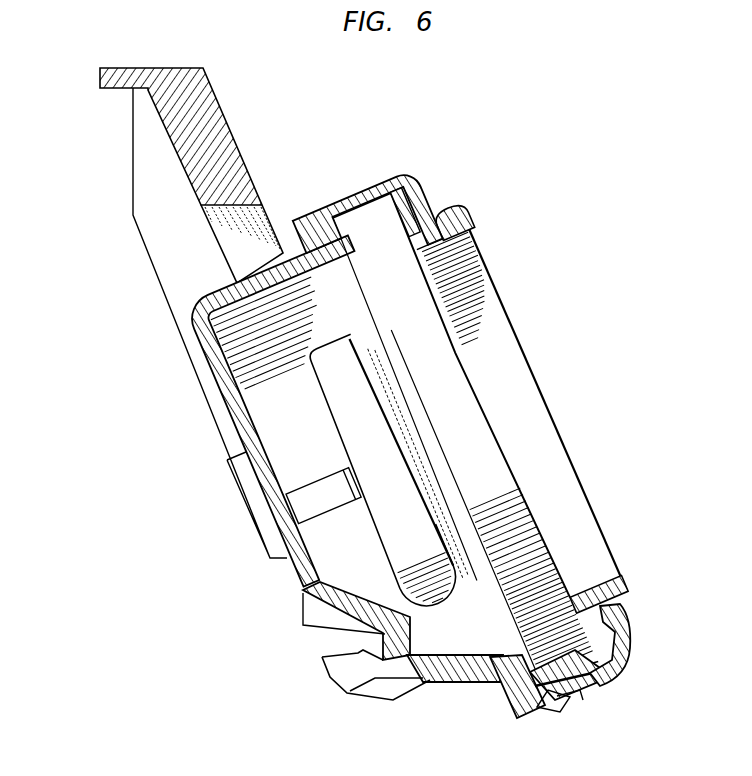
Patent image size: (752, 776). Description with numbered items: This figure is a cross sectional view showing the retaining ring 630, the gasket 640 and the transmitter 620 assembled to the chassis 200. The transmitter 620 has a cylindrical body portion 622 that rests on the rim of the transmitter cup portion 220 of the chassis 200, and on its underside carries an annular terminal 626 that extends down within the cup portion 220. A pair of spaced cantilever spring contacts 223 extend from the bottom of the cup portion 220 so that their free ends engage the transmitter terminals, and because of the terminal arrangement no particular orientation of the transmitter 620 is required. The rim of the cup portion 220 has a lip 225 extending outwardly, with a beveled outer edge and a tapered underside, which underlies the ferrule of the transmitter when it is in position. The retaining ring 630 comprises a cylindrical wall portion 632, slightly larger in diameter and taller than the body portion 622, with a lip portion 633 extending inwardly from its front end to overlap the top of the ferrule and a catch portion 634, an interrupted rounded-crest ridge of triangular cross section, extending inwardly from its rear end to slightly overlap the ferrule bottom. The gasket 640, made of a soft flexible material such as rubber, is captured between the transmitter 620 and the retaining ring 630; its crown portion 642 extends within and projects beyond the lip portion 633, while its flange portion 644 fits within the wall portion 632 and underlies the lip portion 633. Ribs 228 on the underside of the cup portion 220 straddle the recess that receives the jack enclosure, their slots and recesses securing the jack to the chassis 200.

The chassis 200 is at (212, 377).
The transmitter cup portion 220 is at (438, 680).
The cantilever spring contacts 223 is at (325, 517).
The lip 225 is at (570, 690).
The ribs 228 is at (344, 677).
The transmitter 620 is at (480, 423).
The cylindrical body portion 622 is at (563, 708).
The annular terminal 626 is at (330, 338).
The retaining ring 630 is at (358, 186).
The cylindrical wall portion 632 is at (542, 720).
The lip portion 633 is at (633, 648).
The catch portion 634 is at (514, 718).
The gasket 640 is at (526, 250).
The crown portion 642 is at (628, 600).
The flange portion 644 is at (595, 672).